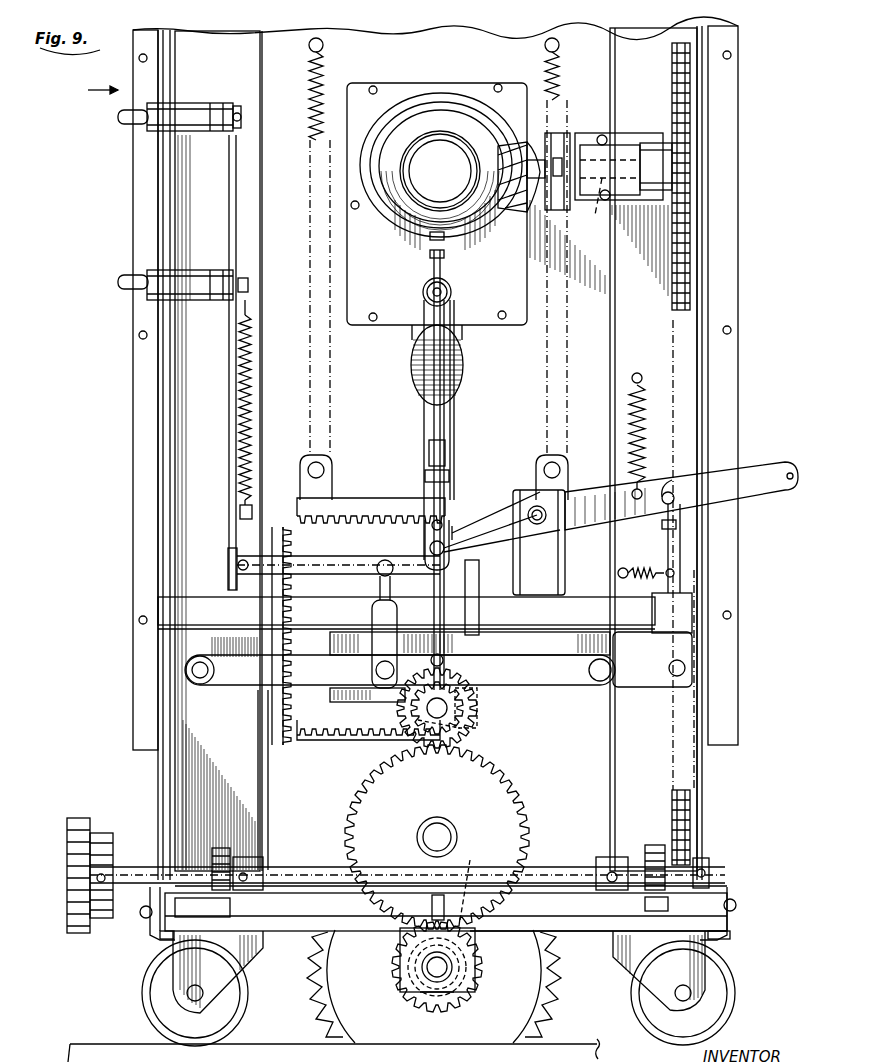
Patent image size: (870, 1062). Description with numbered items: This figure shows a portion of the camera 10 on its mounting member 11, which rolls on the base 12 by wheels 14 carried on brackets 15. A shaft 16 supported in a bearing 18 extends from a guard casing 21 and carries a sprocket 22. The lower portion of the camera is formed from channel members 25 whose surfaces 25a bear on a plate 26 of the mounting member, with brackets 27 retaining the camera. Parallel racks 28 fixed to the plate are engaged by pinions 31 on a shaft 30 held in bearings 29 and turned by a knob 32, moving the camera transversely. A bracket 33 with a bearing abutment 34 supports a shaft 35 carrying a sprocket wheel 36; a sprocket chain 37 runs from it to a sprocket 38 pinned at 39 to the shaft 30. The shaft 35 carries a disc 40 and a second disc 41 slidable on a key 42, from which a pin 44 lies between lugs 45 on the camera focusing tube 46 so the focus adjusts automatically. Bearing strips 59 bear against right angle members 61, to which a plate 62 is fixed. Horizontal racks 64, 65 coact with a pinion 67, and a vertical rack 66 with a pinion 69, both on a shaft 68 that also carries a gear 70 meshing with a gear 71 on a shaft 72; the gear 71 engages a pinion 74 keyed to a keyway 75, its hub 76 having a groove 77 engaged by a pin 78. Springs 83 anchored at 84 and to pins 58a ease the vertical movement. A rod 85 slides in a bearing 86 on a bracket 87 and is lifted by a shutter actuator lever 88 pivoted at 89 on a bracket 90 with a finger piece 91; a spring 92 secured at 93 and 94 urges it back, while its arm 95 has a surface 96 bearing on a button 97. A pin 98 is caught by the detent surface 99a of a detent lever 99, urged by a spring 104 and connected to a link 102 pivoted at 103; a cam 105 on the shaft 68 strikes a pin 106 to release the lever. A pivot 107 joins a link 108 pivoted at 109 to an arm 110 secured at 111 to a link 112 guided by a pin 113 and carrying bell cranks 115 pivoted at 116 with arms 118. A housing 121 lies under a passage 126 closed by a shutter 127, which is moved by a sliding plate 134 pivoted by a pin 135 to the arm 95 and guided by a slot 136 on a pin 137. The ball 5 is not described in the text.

The camera 10 is at (80, 91).
The ball 5 is at (402, 207).
The mounting member 11 is at (600, 935).
The base 12 is at (88, 1041).
The wheels 14 is at (160, 1010).
The brackets 15 is at (182, 975).
The shaft 16 is at (452, 965).
The bearing 18 is at (470, 983).
The guard casing 21 is at (575, 998).
The sprocket 22 is at (578, 1018).
The channel members 25 is at (720, 893).
The surfaces 25a is at (146, 918).
The plate 26 is at (165, 940).
The brackets 27 is at (158, 937).
The racks 28 is at (258, 920).
The bearings 29 is at (290, 845).
The shaft 30 is at (290, 866).
The pinions 31 is at (222, 848).
The knob 32 is at (80, 822).
The bracket 33 is at (622, 133).
The bearing abutment 34 is at (600, 140).
The shaft 35 is at (607, 200).
The sprocket wheel 36 is at (688, 168).
The sprocket chain 37 is at (712, 289).
The sprocket 38 is at (690, 855).
The pin 39 is at (710, 868).
The disc 40 is at (560, 140).
The second disc 41 is at (560, 133).
The key 42 is at (562, 165).
The pin 44 is at (525, 212).
The lugs 45 is at (527, 142).
The camera focusing tube 46 is at (420, 100).
The pins 58a is at (322, 470).
The bearing strips 59 is at (131, 352).
The right angle members 61 is at (156, 170).
The plate 62 is at (272, 190).
The horizontal rack 64 is at (355, 505).
The horizontal rack 65 is at (335, 740).
The vertical rack 66 is at (285, 707).
The pinion 67 is at (437, 745).
The shaft 68 is at (448, 708).
The pinion 69 is at (462, 730).
The gear 70 is at (478, 705).
The gear 71 is at (505, 778).
The shaft 72 is at (437, 820).
The pinion 74 is at (415, 1010).
The keyway 75 is at (400, 960).
The hub 76 is at (455, 1000).
The groove 77 is at (472, 882).
The pin 78 is at (430, 905).
The springs 83 is at (310, 125).
The spring attachment 84 is at (312, 52).
The rod 85 is at (432, 267).
The bearing 86 is at (428, 448).
The bracket 87 is at (462, 635).
The shutter actuator lever 88 is at (748, 505).
The pivotal mounting 89 is at (530, 508).
The bracket 90 is at (539, 542).
The finger piece 91 is at (790, 478).
The spring 92 is at (645, 400).
The spring attachment 93 is at (640, 489).
The spring attachment 94 is at (637, 373).
The arm 95 is at (482, 528).
The surface 96 is at (430, 545).
The button 97 is at (430, 527).
The pin 98 is at (690, 470).
The detent lever 99 is at (685, 575).
The detent surface 99a is at (676, 525).
The link 102 is at (528, 656).
The pivot 103 is at (197, 685).
The spring 104 is at (655, 570).
The cam 105 is at (465, 710).
The pin 106 is at (445, 662).
The pivot 107 is at (380, 680).
The link 108 is at (370, 644).
The pivot 109 is at (387, 600).
The arm 110 is at (325, 535).
The connection 111 is at (228, 560).
The link 112 is at (228, 433).
The pin 113 is at (240, 508).
The bell cranks 115 is at (225, 133).
The pivot 116 is at (240, 105).
The arms 118 is at (118, 118).
The box-like housing 121 is at (185, 618).
The passage 126 is at (410, 335).
The shutter 127 is at (411, 370).
The sliding plate 134 is at (428, 405).
The pin 135 is at (485, 556).
The slot 136 is at (448, 290).
The pin 137 is at (427, 292).